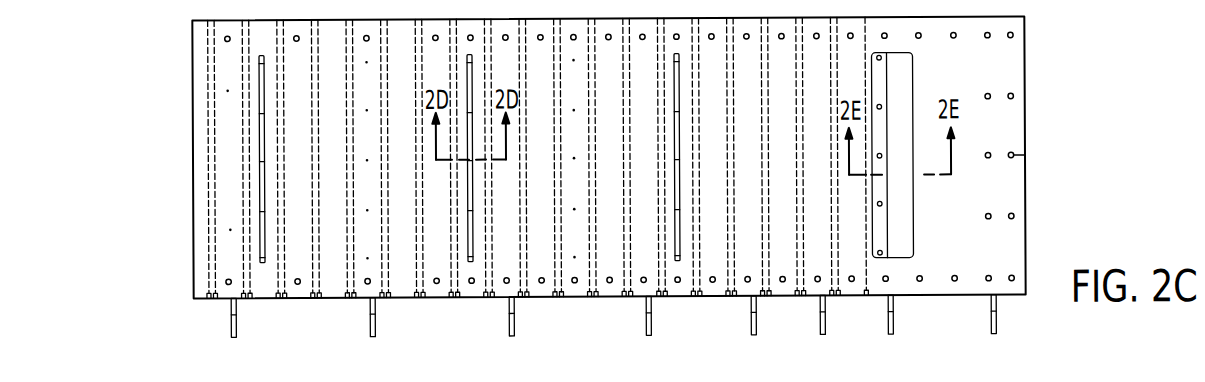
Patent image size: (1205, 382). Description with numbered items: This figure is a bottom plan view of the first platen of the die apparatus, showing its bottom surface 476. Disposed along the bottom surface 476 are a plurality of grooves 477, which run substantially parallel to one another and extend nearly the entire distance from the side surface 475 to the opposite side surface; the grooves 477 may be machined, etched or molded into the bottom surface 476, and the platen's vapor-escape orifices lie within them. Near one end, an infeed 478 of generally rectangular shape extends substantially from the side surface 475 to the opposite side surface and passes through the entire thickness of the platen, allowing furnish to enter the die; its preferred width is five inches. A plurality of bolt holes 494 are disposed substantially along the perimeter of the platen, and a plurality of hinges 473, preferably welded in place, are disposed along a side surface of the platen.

The hinge 473 is at (370, 314).
The side surface 475 is at (437, 297).
The bottom surface 476 is at (1002, 192).
The grooves 477 is at (260, 196).
The infeed 478 is at (900, 84).
The bolt holes 494 is at (226, 36).